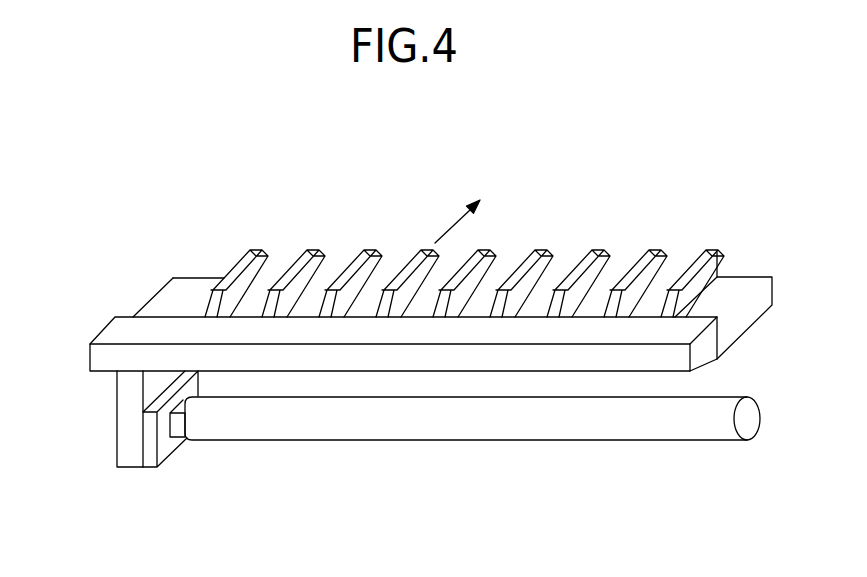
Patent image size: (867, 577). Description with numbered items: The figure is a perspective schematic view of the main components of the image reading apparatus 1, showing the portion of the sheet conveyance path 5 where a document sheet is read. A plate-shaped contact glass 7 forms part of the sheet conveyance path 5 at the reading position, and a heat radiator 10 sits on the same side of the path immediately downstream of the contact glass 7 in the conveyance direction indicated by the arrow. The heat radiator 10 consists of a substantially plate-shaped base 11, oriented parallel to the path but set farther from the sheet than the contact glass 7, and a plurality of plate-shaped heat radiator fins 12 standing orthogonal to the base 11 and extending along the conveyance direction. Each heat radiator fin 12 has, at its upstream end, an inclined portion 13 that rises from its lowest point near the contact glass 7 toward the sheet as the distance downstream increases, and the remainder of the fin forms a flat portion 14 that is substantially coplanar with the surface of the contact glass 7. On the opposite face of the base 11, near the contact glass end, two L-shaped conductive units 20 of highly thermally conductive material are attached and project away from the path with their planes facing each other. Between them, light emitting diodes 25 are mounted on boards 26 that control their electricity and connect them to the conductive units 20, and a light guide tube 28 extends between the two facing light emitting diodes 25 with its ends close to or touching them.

The image reading apparatus 1 is at (258, 160).
The sheet conveyance path 5 is at (365, 250).
The contact glass 7 is at (90, 357).
The heat radiator 10 is at (153, 295).
The base 11 is at (752, 277).
The heat radiator fin 12 is at (708, 250).
The inclined portion 13 is at (208, 278).
The flat portion 14 is at (248, 250).
The conductive unit 20 is at (132, 467).
The light emitting diode 25 is at (178, 440).
The board 26 is at (168, 458).
The light guide tube 28 is at (430, 442).